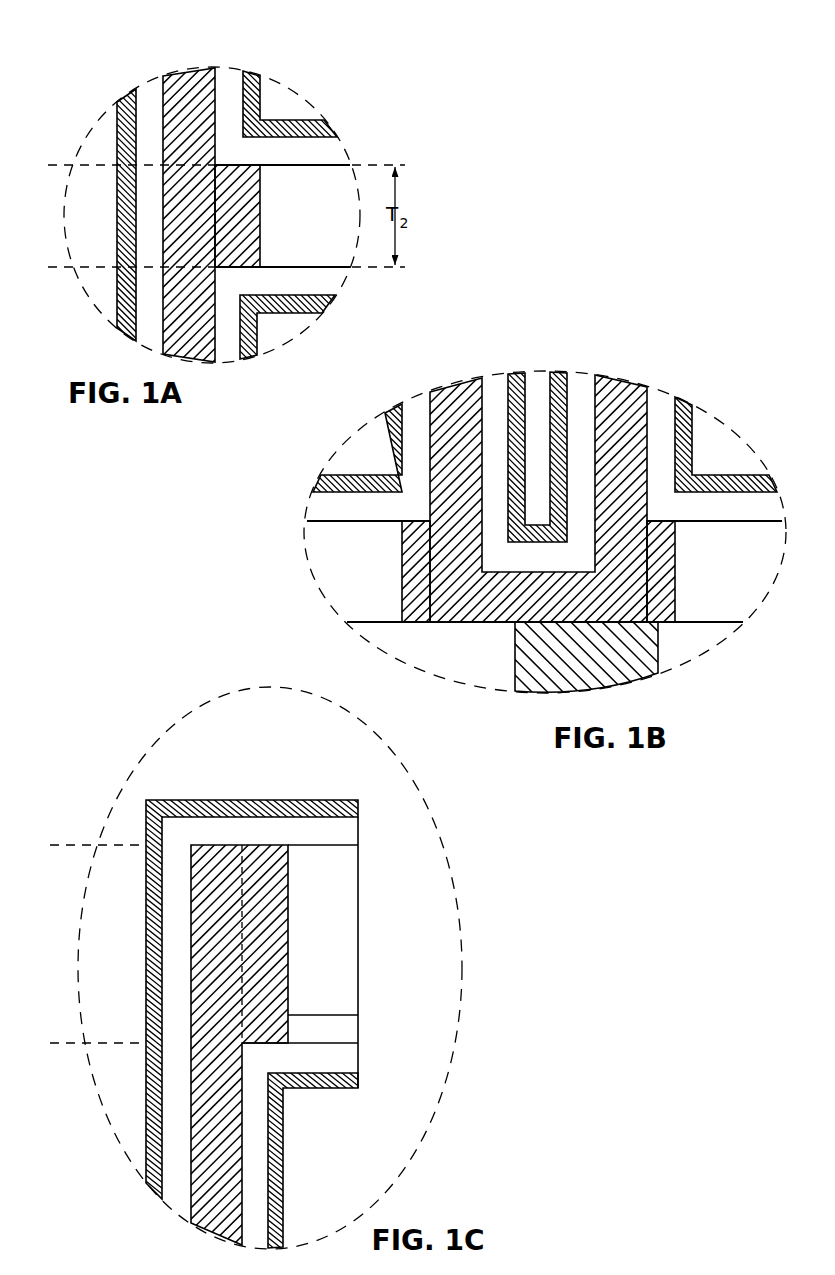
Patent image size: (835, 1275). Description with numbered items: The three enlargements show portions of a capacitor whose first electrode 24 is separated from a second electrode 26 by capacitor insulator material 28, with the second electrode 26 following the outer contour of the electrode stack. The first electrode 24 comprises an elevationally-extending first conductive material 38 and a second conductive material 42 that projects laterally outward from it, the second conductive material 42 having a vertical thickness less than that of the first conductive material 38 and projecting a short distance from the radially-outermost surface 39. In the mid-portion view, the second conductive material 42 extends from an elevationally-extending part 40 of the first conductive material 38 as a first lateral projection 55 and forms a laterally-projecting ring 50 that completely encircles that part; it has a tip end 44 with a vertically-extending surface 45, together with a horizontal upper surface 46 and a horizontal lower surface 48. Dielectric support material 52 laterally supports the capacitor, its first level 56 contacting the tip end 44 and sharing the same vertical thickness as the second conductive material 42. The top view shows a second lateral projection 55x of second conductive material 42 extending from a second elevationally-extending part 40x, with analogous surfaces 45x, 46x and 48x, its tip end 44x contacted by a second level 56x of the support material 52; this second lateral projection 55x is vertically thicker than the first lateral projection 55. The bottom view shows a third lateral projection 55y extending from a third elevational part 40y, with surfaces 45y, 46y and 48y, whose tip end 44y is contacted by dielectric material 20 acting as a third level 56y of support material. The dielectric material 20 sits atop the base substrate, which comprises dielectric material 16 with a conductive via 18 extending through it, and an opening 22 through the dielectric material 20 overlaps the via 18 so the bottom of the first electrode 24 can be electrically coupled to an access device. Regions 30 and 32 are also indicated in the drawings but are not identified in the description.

In FIG. 1B, the dielectric material 16 is at (692, 642).
In FIG. 1B, the conductive via 18 is at (576, 666).
In FIG. 1B, the dielectric material 20 is at (726, 569).
In FIG. 1B, the opening 22 is at (400, 590).
In FIG. 1A, the first electrode 24 is at (197, 67).
In FIG. 1B, the first electrode 24 is at (632, 465).
In FIG. 1C, the first electrode 24 is at (215, 857).
In FIG. 1A, the second electrode 26 is at (120, 118).
In FIG. 1B, the second electrode 26 is at (318, 484).
In FIG. 1C, the second electrode 26 is at (144, 818).
In FIG. 1A, the capacitor insulator material 28 is at (150, 95).
In FIG. 1B, the capacitor insulator material 28 is at (580, 392).
In FIG. 1C, the capacitor insulator material 28 is at (318, 800).
In FIG. 1A, the electrode 30 is at (165, 348).
In FIG. 1B, the electrode 30 is at (621, 405).
In FIG. 1C, the electrode 30 is at (212, 1112).
In FIG. 1B, the bottom portion 32 is at (503, 612).
In FIG. 1A, the first conductive material 38 is at (184, 95).
In FIG. 1B, the first conductive material 38 is at (440, 487).
In FIG. 1C, the first conductive material 38 is at (207, 1075).
In FIG. 1A, the radially-outermost surface 39 is at (232, 137).
In FIG. 1A, the elevationally-extending part 40 is at (52, 165).
In FIG. 1C, the second elevationally-extending part 40x is at (54, 845).
In FIG. 1B, the third elevational part 40y is at (788, 521).
In FIG. 1A, the second conductive material 42 is at (243, 210).
In FIG. 1B, the second conductive material 42 is at (634, 403).
In FIG. 1C, the second conductive material 42 is at (277, 955).
In FIG. 1A, the tip end 44 is at (264, 222).
In FIG. 1C, the tip end 44x is at (292, 985).
In FIG. 1B, the tip end 44y is at (679, 595).
In FIG. 1A, the vertically-extending surface 45 is at (262, 247).
In FIG. 1C, the vertically-extending surface 45x is at (292, 1015).
In FIG. 1B, the vertically-extending surface 45y is at (400, 525).
In FIG. 1A, the upper surface 46 is at (252, 137).
In FIG. 1C, the upper surface 46x is at (270, 860).
In FIG. 1B, the upper surface 46y is at (659, 520).
In FIG. 1A, the lower surface 48 is at (232, 265).
In FIG. 1C, the lower surface 48x is at (270, 1046).
In FIG. 1B, the lower surface 48y is at (663, 626).
In FIG. 1A, the laterally-projecting ring 50 is at (252, 177).
In FIG. 1A, the support material 52 is at (321, 198).
In FIG. 1C, the support material 52 is at (308, 879).
In FIG. 1A, the first lateral projection 55 is at (257, 255).
In FIG. 1C, the second lateral projection 55x is at (267, 845).
In FIG. 1B, the third lateral projection 55y is at (664, 526).
In FIG. 1A, the first level 56 is at (352, 268).
In FIG. 1C, the second level 56x is at (330, 908).
In FIG. 1B, the third level 56y is at (755, 532).